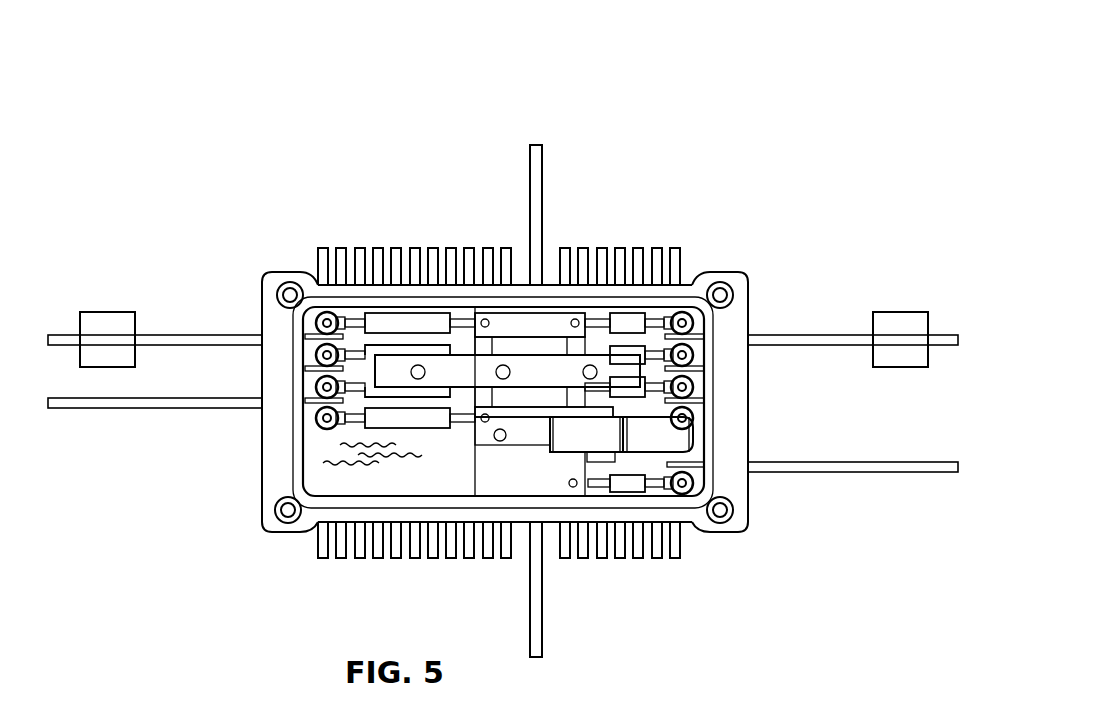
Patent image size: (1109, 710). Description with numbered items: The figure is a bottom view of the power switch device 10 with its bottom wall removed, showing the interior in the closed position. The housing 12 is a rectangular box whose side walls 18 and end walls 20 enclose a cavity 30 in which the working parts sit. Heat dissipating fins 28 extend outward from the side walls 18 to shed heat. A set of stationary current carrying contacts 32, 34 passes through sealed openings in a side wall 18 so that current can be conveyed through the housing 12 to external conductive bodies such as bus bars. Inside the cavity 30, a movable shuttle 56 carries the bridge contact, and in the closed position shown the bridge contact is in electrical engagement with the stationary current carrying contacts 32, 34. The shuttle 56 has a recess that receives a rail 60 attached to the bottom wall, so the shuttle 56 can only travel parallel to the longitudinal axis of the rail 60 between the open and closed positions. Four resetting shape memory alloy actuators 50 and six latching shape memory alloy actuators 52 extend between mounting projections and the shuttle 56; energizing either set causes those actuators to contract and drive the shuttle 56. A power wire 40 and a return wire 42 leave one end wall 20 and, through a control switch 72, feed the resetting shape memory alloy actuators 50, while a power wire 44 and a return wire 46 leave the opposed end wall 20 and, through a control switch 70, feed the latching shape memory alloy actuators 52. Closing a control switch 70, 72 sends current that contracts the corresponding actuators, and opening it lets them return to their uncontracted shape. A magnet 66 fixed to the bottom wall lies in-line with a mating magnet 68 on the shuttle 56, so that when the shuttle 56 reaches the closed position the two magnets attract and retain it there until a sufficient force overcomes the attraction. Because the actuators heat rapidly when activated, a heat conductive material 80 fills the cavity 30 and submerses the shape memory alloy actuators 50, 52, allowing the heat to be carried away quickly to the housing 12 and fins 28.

The power switch device 10 is at (758, 172).
The housing 12 is at (673, 507).
The side walls 18 is at (658, 290).
The end walls 20 is at (305, 422).
The heat dissipating fins 28 is at (615, 249).
The cavity 30 is at (357, 463).
The stationary current carrying contact 32 is at (543, 615).
The stationary current carrying contact 34 is at (543, 180).
The power wire 40 is at (192, 333).
The return wire 42 is at (105, 408).
The power wire 44 is at (778, 333).
The return wire 46 is at (885, 472).
The resetting shape memory alloy actuators 50 is at (417, 345).
The latching shape memory alloy actuators 52 is at (653, 322).
The shuttle 56 is at (524, 478).
The rail 60 is at (488, 367).
The magnet 66 is at (678, 428).
The mating magnet 68 is at (577, 442).
The control switch 70 is at (893, 312).
The control switch 72 is at (105, 312).
The heat conductive material 80 is at (323, 460).